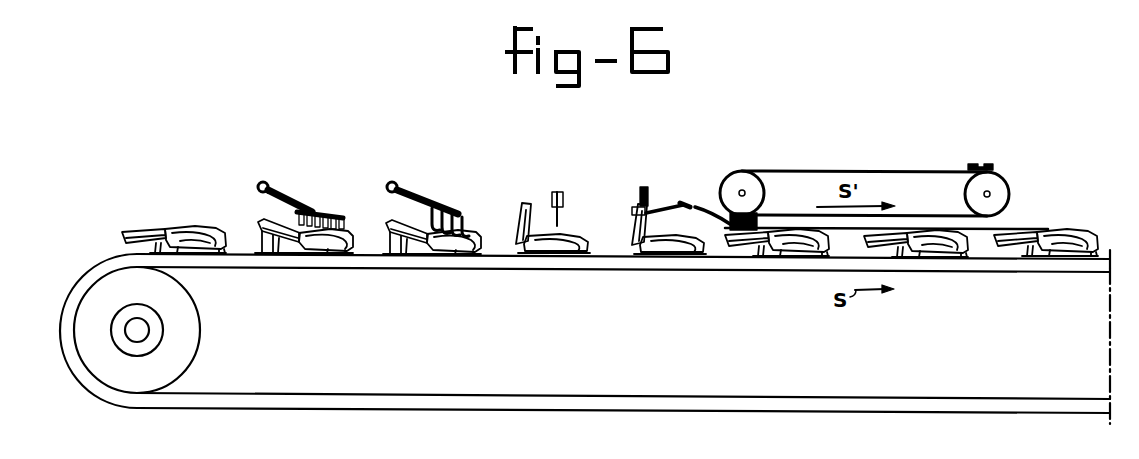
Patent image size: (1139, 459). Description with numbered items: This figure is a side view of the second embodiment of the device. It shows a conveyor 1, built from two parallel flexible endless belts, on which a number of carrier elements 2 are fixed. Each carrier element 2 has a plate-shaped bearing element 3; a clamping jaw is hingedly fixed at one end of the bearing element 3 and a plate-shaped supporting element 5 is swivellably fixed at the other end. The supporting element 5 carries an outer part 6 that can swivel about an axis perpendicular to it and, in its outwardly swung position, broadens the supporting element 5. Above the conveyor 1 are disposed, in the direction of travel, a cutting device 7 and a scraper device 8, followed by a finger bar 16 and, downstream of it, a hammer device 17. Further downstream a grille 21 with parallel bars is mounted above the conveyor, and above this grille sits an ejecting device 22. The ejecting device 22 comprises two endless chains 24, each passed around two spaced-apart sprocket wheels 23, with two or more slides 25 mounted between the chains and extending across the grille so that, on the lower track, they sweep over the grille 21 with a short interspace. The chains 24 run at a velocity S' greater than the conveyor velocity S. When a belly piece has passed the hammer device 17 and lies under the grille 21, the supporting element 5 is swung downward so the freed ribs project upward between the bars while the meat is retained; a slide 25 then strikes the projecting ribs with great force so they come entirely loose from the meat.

The conveyor 1 is at (92, 264).
The carrier element 2 is at (628, 193).
The plate-shaped bearing element 3 is at (330, 256).
The plate-shaped supporting element 5 is at (280, 241).
The outer part 6 is at (259, 236).
The cutting device 7 is at (303, 191).
The scraper device 8 is at (435, 191).
The finger bar 16 is at (564, 200).
The hammer device 17 is at (662, 205).
The grille 21 is at (1041, 228).
The ejecting device 22 is at (874, 155).
The sprocket wheel 23 is at (741, 180).
The endless chain 24 is at (880, 169).
The slide 25 is at (724, 214).